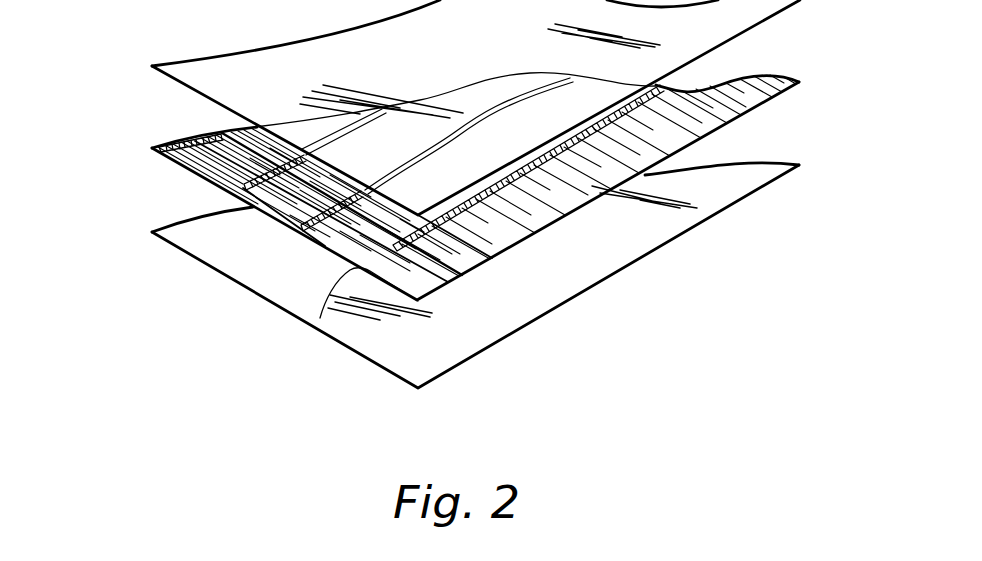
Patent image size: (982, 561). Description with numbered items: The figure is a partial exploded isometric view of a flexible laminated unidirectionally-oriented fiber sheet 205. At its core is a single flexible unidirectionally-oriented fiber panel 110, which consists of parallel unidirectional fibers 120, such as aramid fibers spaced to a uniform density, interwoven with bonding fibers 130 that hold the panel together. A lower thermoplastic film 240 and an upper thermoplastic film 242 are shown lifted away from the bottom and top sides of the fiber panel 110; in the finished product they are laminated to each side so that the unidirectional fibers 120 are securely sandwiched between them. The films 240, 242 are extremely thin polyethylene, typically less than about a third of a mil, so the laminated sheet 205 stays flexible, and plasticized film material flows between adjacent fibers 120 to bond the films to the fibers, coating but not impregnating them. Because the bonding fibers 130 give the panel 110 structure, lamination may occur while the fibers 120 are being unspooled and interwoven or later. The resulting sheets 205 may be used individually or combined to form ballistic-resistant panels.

The upper thermoplastic film 242 is at (175, 64).
The unidirectional fibers 120 is at (173, 147).
The unidirectionally-oriented fiber panel 110 is at (752, 78).
The bonding fibers 130 is at (332, 282).
The lower thermoplastic film 240 is at (175, 230).
The flexible laminated unidirectionally-oriented fiber sheet 205 is at (459, 194).